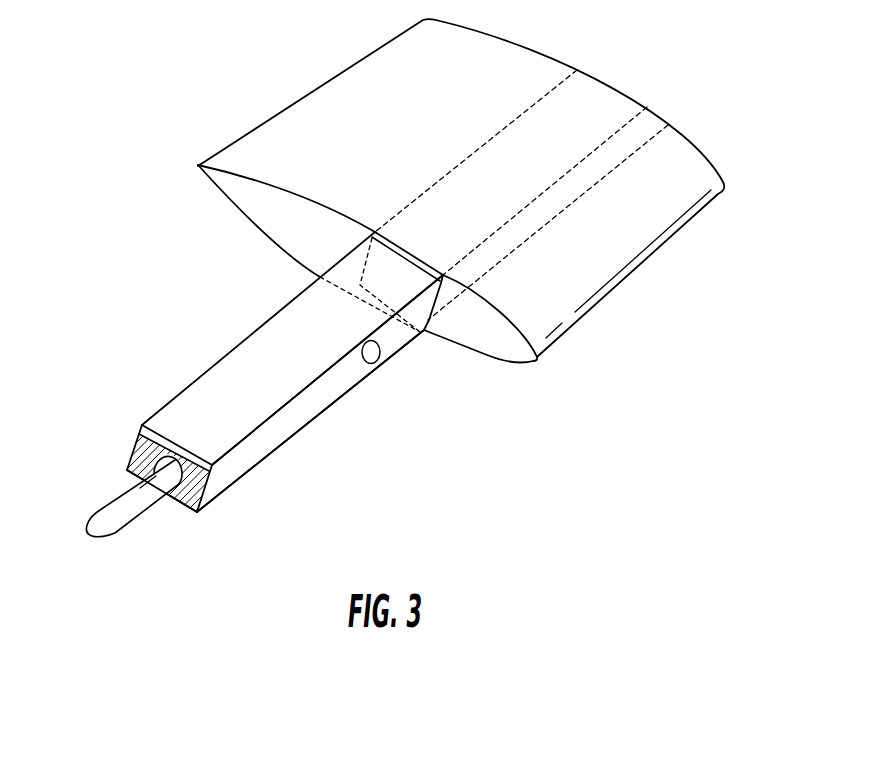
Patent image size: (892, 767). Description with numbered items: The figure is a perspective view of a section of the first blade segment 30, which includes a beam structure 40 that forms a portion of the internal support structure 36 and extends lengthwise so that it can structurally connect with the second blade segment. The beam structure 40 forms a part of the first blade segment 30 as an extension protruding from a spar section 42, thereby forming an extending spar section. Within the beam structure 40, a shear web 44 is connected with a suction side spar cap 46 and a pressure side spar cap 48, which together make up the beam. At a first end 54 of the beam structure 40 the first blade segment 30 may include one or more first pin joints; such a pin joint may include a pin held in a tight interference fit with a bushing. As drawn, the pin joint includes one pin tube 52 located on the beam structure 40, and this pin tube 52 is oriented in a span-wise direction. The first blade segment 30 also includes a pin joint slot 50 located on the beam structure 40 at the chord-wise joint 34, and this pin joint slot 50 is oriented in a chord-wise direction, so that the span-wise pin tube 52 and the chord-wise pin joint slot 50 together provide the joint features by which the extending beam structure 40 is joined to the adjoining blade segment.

The first blade segment 30 is at (305, 107).
The chord-wise joint 34 is at (144, 222).
The internal support structure 36 is at (307, 445).
The beam structure 40 is at (173, 405).
The spar section 42 is at (607, 104).
The shear web 44 is at (341, 390).
The suction side spar cap 46 is at (128, 468).
The pressure side spar cap 48 is at (142, 423).
The pin joint slot 50 is at (373, 353).
The pin tube 52 is at (142, 512).
The first end 54 is at (222, 508).